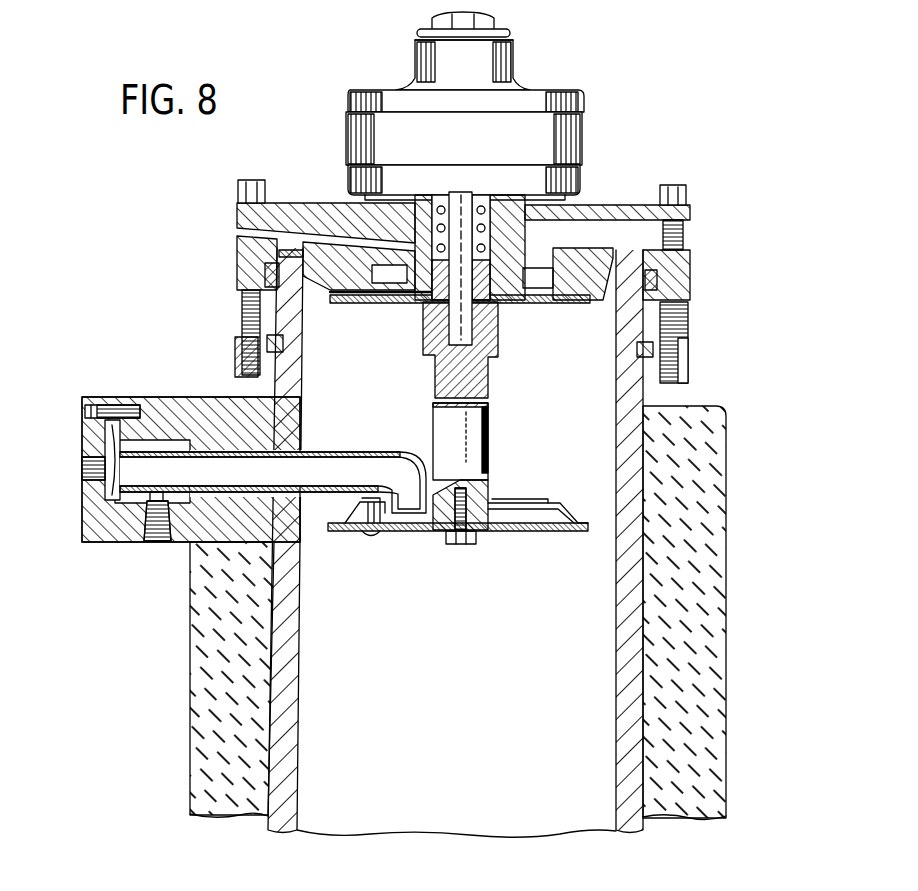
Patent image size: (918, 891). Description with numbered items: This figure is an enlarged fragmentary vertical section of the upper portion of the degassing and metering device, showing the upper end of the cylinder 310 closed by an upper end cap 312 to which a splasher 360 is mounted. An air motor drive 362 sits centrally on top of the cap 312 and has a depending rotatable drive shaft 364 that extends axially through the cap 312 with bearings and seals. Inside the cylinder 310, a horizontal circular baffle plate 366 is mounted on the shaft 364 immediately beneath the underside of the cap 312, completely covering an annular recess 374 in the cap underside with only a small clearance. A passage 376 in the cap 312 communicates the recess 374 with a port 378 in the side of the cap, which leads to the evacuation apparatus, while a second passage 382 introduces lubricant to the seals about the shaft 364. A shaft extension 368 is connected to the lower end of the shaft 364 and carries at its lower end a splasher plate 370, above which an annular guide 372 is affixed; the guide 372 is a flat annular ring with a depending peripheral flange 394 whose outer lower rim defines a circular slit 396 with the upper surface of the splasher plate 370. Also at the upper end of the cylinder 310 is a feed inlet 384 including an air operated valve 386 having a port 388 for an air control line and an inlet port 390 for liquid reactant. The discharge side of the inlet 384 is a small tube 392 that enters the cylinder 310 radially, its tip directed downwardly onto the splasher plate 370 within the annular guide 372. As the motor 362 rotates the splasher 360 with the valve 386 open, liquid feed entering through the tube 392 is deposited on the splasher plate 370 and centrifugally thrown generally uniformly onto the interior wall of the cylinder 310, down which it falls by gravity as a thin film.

The cylinder 310 is at (636, 668).
The upper end cap 312 is at (317, 203).
The splasher 360 is at (500, 444).
The air motor drive 362 is at (528, 96).
The drive shaft 364 is at (455, 283).
The baffle plate 366 is at (535, 303).
The shaft extension 368 is at (490, 412).
The splasher plate 370 is at (523, 531).
The annular guide 372 is at (545, 499).
The annular recess 374 is at (545, 294).
The passage 376 is at (605, 218).
The port 378 is at (688, 248).
The second passage 382 is at (293, 203).
The feed inlet 384 is at (210, 397).
The air operated valve 386 is at (80, 440).
The port 388 is at (80, 478).
The inlet port 390 is at (163, 542).
The tube 392 is at (350, 452).
The depending peripheral flange 394 is at (606, 480).
The circular slit 396 is at (588, 522).